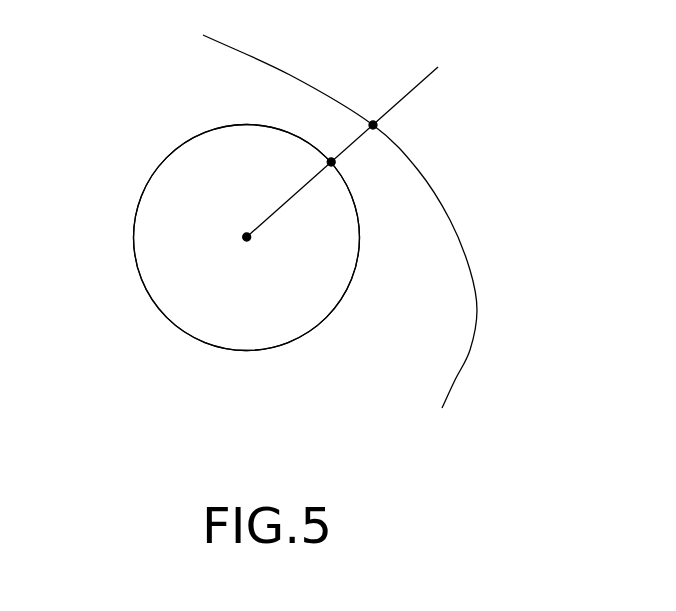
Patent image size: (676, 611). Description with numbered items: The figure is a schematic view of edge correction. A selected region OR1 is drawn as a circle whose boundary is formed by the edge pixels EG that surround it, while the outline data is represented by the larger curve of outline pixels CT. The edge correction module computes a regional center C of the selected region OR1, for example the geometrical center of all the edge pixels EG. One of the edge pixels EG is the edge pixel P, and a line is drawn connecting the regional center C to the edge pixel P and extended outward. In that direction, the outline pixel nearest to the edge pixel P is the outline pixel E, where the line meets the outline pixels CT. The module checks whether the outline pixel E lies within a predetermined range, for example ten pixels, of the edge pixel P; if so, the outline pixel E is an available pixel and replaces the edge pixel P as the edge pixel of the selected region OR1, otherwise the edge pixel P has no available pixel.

The selected region OR1 is at (175, 178).
The edge pixels EG is at (167, 322).
The outline pixels CT is at (476, 306).
The regional center C is at (257, 260).
The edge pixel P is at (352, 166).
The outline pixel E is at (397, 128).